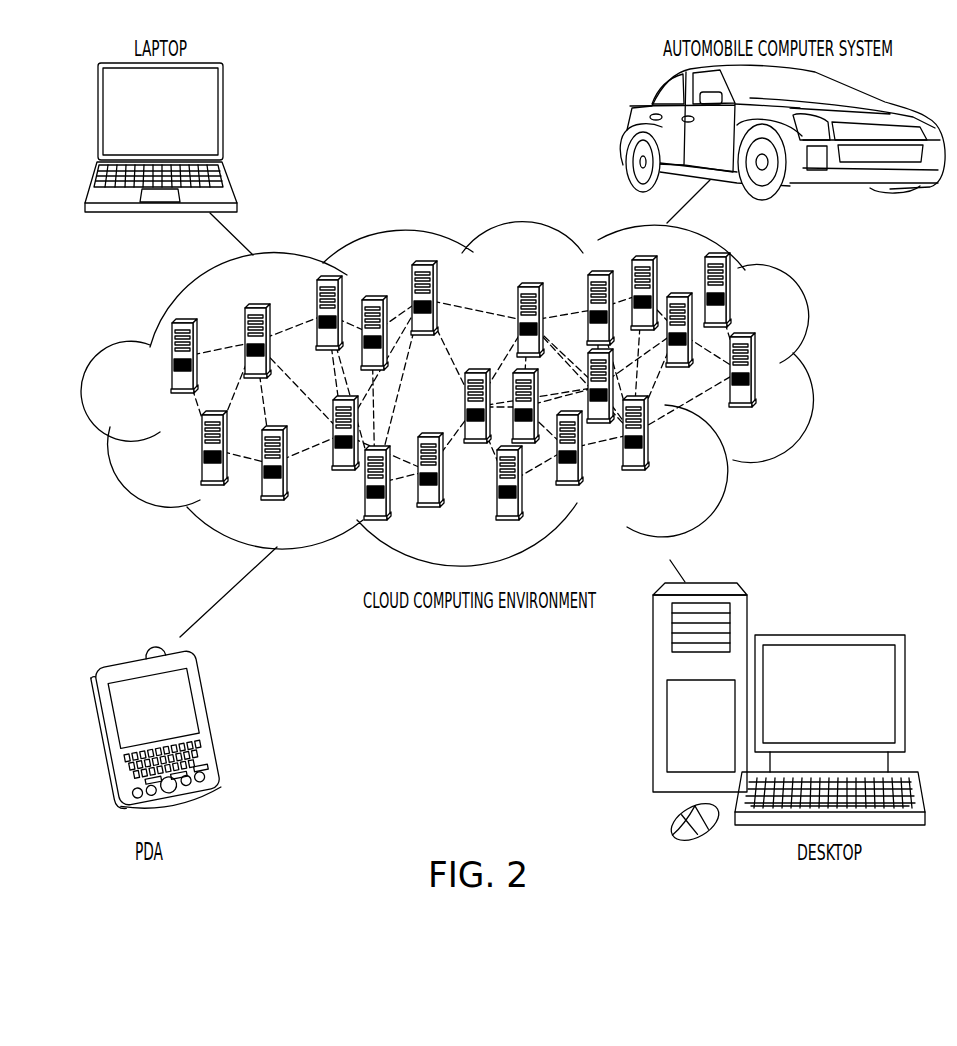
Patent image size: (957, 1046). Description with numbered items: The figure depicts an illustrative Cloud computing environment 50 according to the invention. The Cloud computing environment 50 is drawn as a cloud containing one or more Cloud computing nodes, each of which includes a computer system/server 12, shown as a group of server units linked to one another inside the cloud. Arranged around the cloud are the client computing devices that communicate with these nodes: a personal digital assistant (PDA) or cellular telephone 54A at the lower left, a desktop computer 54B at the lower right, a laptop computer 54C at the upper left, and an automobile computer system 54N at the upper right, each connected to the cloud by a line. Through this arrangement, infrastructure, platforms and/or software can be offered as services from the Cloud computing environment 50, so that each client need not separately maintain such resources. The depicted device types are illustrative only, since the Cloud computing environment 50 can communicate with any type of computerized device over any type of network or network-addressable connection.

The Cloud computing environment 50 is at (830, 368).
The computer system/server 12 is at (779, 399).
The personal digital assistant (PDA) or cellular telephone 54A is at (213, 722).
The desktop computer 54B is at (827, 635).
The laptop computer 54C is at (223, 120).
The automobile computer system 54N is at (620, 134).